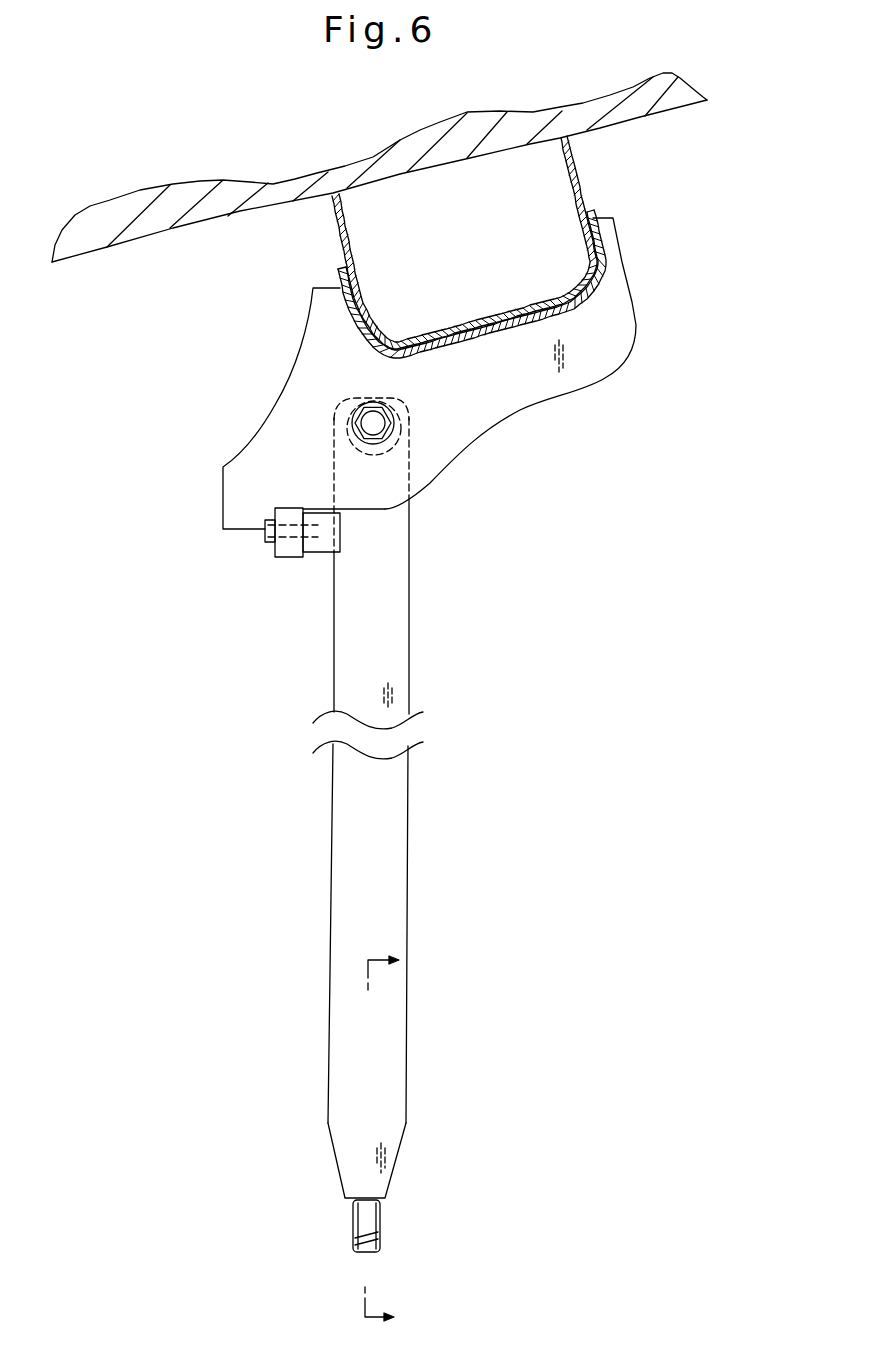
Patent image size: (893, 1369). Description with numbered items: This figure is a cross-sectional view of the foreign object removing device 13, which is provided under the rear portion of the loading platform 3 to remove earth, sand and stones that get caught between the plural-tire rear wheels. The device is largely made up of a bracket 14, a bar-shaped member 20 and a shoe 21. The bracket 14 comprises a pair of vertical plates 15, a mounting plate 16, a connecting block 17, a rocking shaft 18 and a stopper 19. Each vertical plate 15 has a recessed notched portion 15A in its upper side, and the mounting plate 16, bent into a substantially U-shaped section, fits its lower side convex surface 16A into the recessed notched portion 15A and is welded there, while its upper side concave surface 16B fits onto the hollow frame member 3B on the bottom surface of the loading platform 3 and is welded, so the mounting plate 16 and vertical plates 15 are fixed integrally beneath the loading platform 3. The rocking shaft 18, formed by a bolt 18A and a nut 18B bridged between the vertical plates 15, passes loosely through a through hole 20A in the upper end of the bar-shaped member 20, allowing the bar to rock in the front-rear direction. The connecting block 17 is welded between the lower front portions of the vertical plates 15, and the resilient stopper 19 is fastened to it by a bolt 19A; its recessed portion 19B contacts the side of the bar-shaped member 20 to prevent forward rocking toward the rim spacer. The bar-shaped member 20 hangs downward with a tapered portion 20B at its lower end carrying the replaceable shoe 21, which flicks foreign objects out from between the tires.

The loading platform 3 is at (153, 222).
The hollow frame member 3B is at (573, 177).
The foreign object removing device 13 is at (459, 779).
The bracket 14 is at (562, 395).
The vertical plate 15 is at (278, 448).
The recessed notched portion 15A is at (472, 343).
The mounting plate 16 is at (538, 299).
The lower side convex surface 16A is at (566, 322).
The upper side concave surface 16B is at (594, 301).
The connecting block 17 is at (274, 553).
The rocking shaft 18 is at (365, 411).
The bolt 18A is at (356, 420).
The nut 18B is at (391, 432).
The stopper 19 is at (318, 551).
The bolt 19A is at (266, 537).
The recessed portion 19B is at (342, 531).
The bar-shaped member 20 is at (374, 798).
The through hole 20A is at (388, 458).
The tapered portion 20B is at (390, 1148).
The shoe 21 is at (370, 1230).